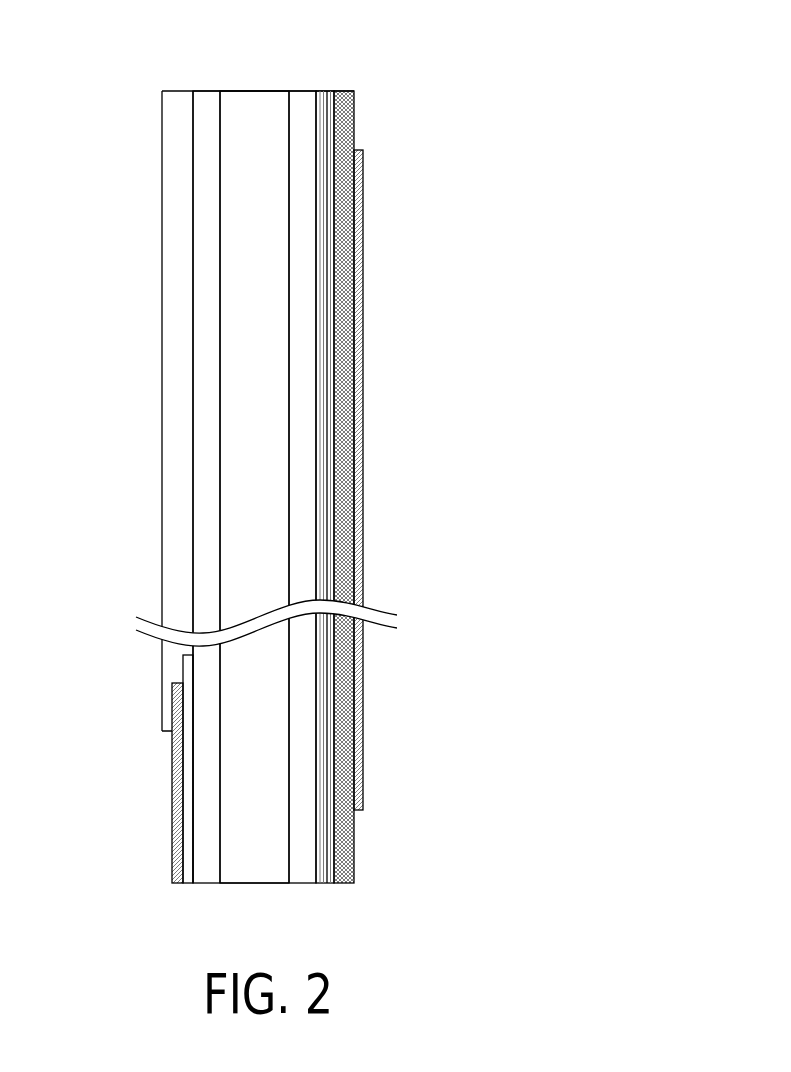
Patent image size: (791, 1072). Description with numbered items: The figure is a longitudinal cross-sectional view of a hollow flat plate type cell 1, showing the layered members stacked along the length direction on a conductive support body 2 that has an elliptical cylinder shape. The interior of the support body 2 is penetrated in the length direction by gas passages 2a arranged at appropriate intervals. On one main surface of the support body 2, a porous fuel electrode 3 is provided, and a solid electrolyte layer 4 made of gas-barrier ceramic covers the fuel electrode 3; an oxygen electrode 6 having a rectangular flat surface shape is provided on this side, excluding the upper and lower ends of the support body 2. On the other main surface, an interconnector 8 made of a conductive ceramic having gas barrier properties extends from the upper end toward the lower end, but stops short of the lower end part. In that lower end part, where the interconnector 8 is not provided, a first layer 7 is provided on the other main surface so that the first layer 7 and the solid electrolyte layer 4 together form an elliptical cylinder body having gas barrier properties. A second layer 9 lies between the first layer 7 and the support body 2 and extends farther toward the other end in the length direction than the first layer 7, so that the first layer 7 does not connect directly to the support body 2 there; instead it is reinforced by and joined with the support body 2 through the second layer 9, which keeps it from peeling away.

The cell 1 is at (488, 160).
The conductive support body 2 is at (297, 152).
The gas passages 2a is at (260, 103).
The fuel electrode 3 is at (323, 260).
The solid electrolyte layer 4 is at (342, 363).
The oxygen electrode 6 is at (358, 493).
The first layer 7 is at (174, 858).
The interconnector 8 is at (187, 198).
The second layer 9 is at (188, 780).